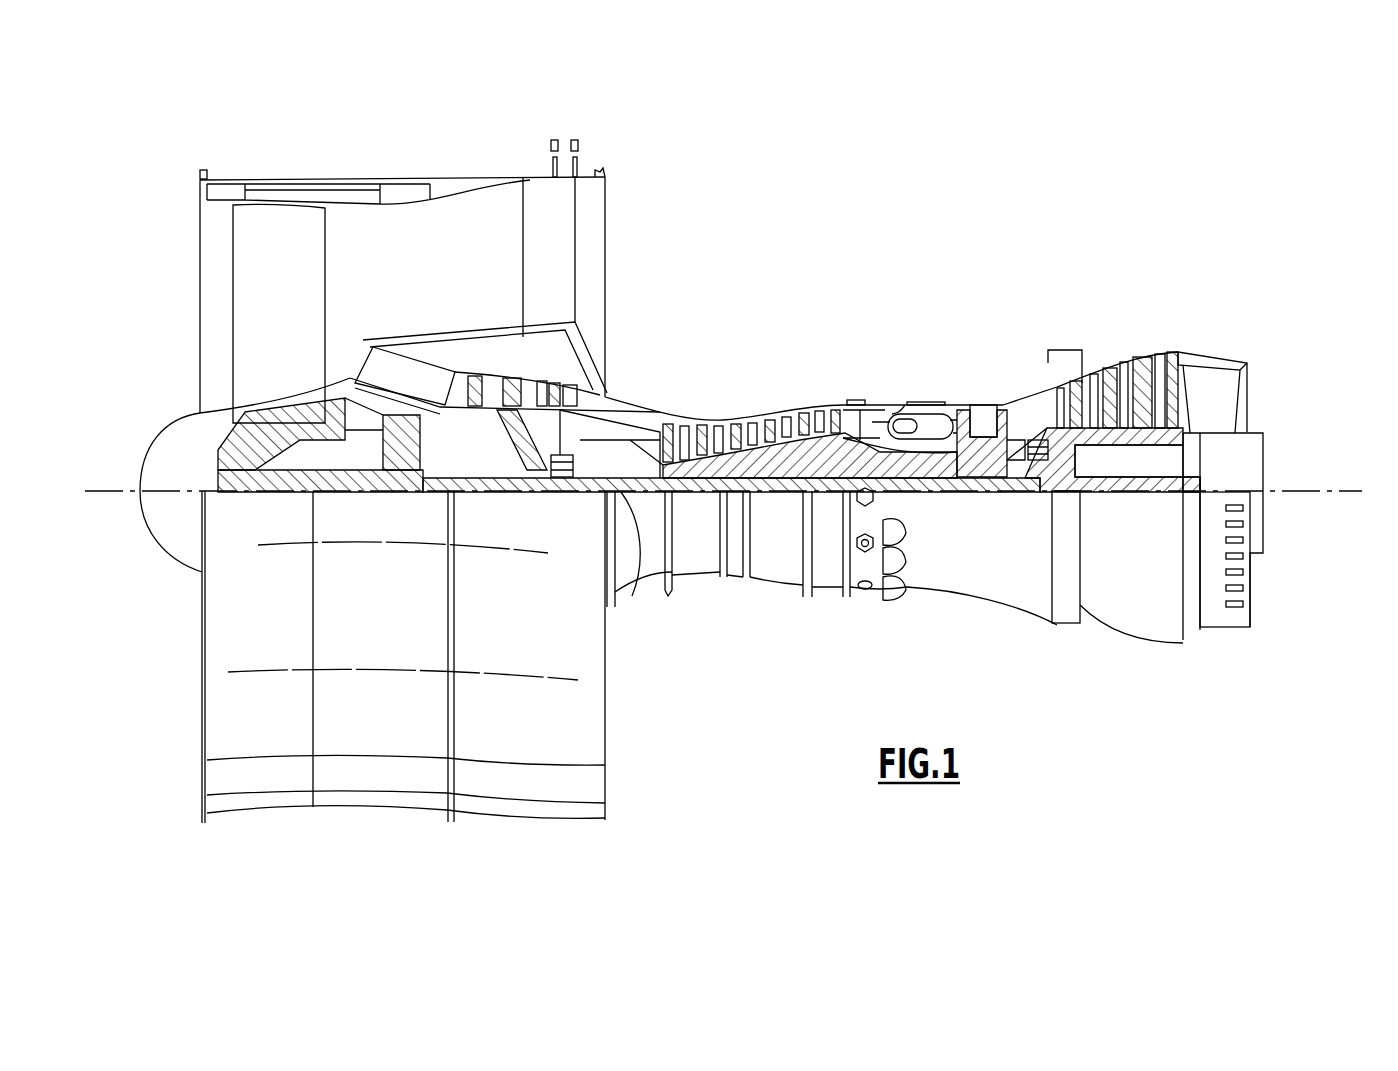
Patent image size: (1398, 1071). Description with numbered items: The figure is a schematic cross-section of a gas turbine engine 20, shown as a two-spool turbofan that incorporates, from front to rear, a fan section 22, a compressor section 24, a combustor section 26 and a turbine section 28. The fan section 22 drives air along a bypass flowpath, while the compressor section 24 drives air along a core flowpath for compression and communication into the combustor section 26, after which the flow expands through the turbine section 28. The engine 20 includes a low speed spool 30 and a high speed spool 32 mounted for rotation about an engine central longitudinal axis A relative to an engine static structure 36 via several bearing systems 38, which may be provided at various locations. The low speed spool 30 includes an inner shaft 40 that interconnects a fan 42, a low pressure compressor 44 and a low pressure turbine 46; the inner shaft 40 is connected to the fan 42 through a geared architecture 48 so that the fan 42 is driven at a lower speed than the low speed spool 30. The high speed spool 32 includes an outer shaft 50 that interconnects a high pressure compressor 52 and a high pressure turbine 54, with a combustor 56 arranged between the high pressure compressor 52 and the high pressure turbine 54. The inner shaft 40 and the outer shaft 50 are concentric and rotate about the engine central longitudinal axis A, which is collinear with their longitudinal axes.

The gas turbine engine 20 is at (937, 219).
The fan section 22 is at (323, 168).
The compressor section 24 is at (659, 388).
The combustor section 26 is at (911, 378).
The turbine section 28 is at (1074, 333).
The low speed spool 30 is at (781, 500).
The high speed spool 32 is at (822, 452).
The engine static structure 36 is at (825, 595).
The bearing systems 38 is at (560, 493).
The inner shaft 40 is at (628, 590).
The fan 42 is at (290, 318).
The low pressure compressor 44 is at (535, 380).
The low pressure turbine 46 is at (1110, 375).
The geared architecture 48 is at (412, 480).
The outer shaft 50 is at (915, 470).
The high pressure compressor 52 is at (755, 460).
The high pressure turbine 54 is at (984, 402).
The combustor 56 is at (915, 425).
The engine central longitudinal axis A is at (1353, 491).